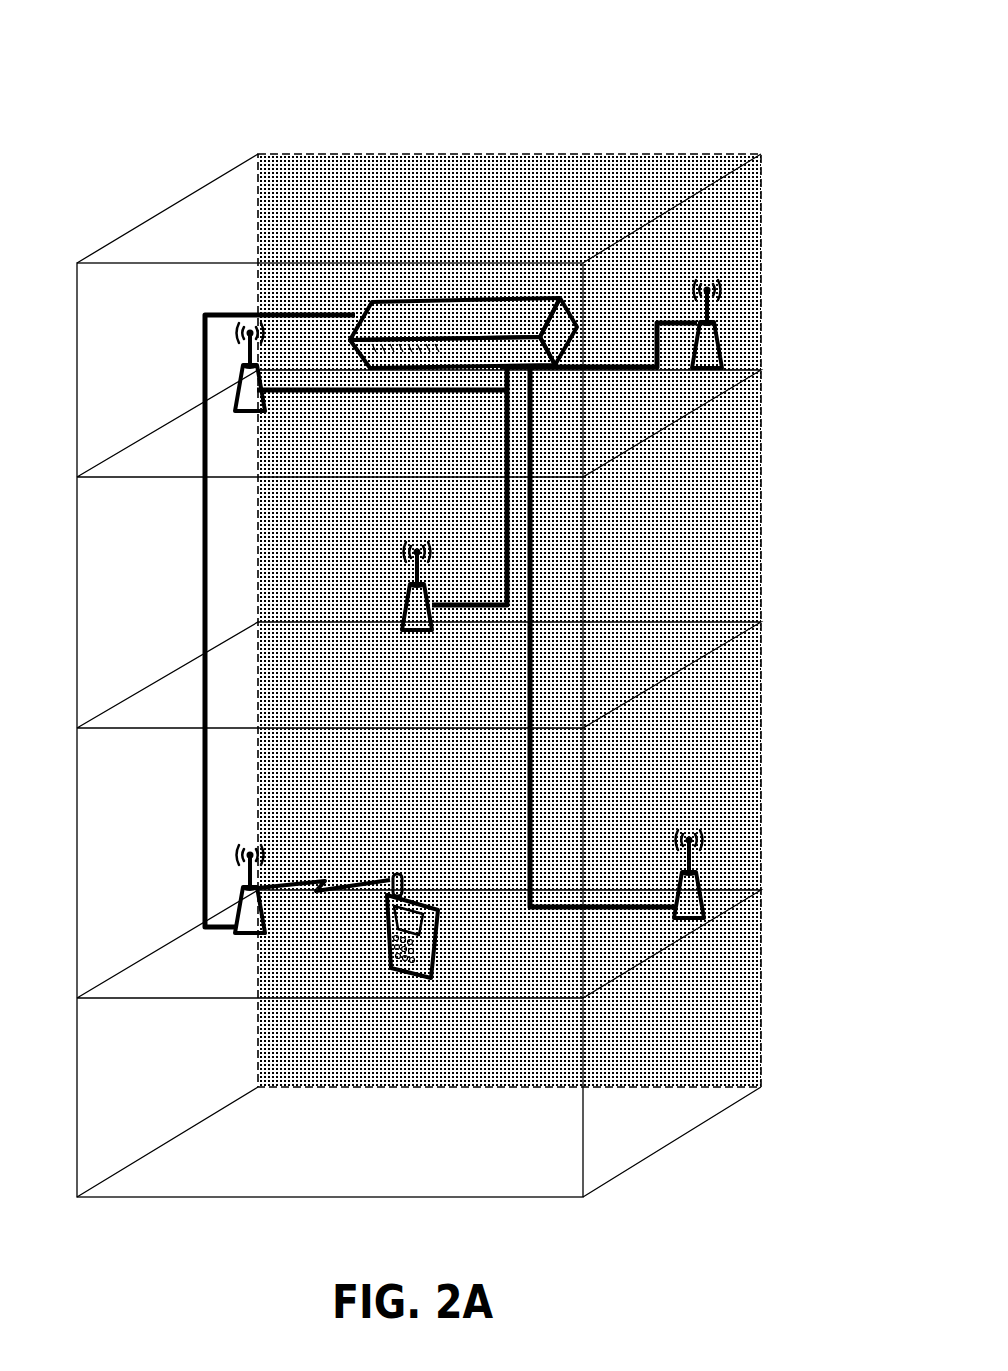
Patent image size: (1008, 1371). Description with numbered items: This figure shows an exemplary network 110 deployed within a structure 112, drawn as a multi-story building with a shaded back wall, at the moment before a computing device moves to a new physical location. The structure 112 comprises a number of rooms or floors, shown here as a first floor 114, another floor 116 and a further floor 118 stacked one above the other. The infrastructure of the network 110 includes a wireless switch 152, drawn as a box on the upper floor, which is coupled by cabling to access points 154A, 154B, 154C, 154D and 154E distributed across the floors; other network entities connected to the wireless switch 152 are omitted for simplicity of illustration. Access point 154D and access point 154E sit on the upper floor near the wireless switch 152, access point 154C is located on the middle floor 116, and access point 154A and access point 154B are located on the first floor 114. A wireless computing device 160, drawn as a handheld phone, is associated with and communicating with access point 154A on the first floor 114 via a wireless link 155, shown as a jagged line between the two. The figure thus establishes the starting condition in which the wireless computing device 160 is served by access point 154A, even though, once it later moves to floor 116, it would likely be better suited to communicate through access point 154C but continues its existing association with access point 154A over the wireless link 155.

The network 110 is at (113, 45).
The structure 112 is at (655, 153).
The first floor 114 is at (730, 905).
The floor 116 is at (722, 645).
The floor 118 is at (745, 375).
The wireless switch 152 is at (378, 298).
The access point 154A is at (252, 905).
The access point 154B is at (672, 872).
The access point 154C is at (407, 583).
The access point 154D is at (263, 413).
The access point 154E is at (703, 322).
The wireless link 155 is at (325, 893).
The wireless computing device 160 is at (432, 943).